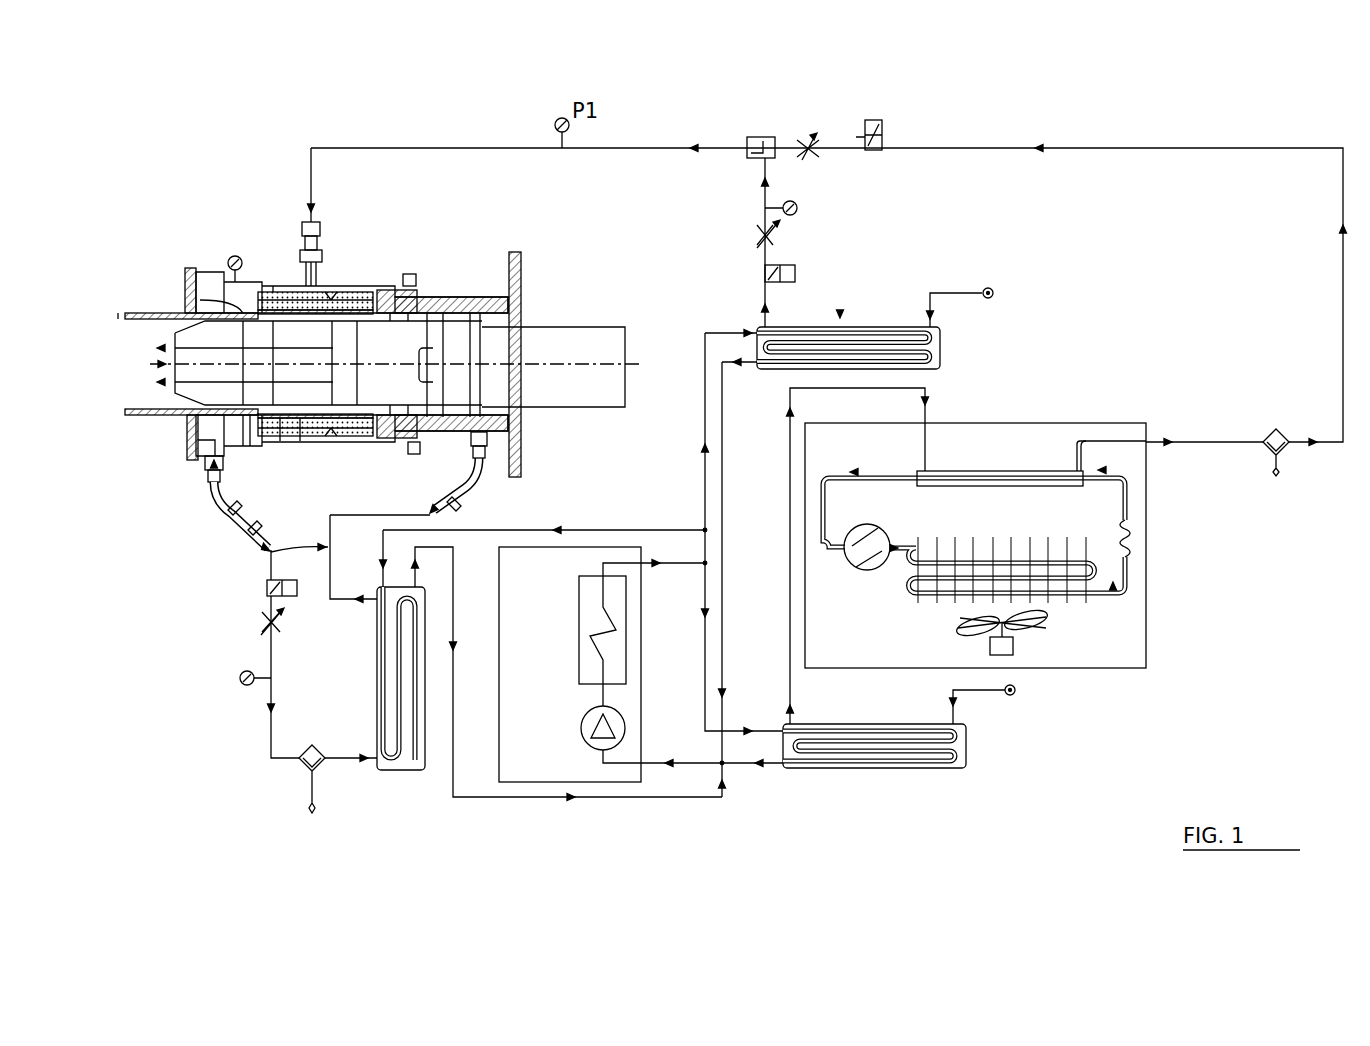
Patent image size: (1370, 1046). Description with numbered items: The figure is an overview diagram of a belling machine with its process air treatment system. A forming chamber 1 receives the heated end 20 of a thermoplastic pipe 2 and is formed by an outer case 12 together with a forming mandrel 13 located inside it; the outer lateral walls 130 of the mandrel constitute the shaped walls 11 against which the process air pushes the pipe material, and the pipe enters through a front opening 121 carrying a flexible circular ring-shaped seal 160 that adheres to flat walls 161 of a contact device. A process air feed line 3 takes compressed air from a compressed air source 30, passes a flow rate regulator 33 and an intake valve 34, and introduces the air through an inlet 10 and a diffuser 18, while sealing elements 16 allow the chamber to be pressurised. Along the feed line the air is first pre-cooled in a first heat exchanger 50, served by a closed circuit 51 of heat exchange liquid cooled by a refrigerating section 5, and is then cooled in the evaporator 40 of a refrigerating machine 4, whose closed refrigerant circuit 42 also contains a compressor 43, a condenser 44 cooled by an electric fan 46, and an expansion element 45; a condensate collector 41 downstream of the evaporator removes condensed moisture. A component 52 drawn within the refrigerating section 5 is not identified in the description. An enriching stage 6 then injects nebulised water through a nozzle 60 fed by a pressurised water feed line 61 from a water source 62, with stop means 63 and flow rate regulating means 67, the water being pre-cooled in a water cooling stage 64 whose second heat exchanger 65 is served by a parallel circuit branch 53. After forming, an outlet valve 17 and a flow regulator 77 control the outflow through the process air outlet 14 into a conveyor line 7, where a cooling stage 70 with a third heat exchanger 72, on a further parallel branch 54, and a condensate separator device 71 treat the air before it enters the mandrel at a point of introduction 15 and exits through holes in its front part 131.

The forming chamber 1 is at (226, 300).
The pipe 2 is at (133, 313).
The process air feed line 3 is at (442, 149).
The refrigerating machine 4 is at (1020, 539).
The refrigerating section 5 is at (550, 711).
The enriching stage 6 is at (733, 243).
The process air conveyor line 7 is at (262, 568).
The inlet 10 is at (331, 270).
The shaped walls 11 is at (276, 441).
The outer case 12 is at (249, 446).
The forming mandrel 13 is at (385, 300).
The process air outlet 14 is at (203, 467).
The point of introduction 15 is at (443, 416).
The sealing elements 16 is at (143, 313).
The outlet valve 17 is at (297, 598).
The diffuser 18 is at (300, 285).
The heated end of the pipe 20 is at (298, 296).
The compressed air source 30 is at (1016, 695).
The flow rate regulator 33 is at (815, 155).
The intake valve 34 is at (884, 130).
The evaporator 40 is at (1010, 470).
The condensate collector 41 is at (1283, 450).
The closed circuit for recirculating the refrigerant 42 is at (1127, 487).
The compressor 43 is at (873, 531).
The condenser 44 is at (1002, 548).
The expansion element 45 is at (1133, 540).
The electric fan 46 is at (1048, 628).
The first heat exchanger 50 is at (862, 770).
The closed circuit for the heat exchange liquid 51 is at (745, 768).
The heating device 52 is at (498, 702).
The circuit branch 53 is at (704, 362).
The circuit branch 54 is at (496, 530).
The nozzle 60 is at (756, 147).
The pressurised water feed line 61 is at (761, 257).
The water source 62 is at (995, 290).
The means for stopping the inflow of process water 63 is at (797, 273).
The water cooling stage 64 is at (840, 312).
The second heat exchanger 65 is at (943, 352).
The means for regulating the flow rate of process water 67 is at (773, 238).
The cooling stage 70 is at (397, 728).
The condensate separator device 71 is at (306, 765).
The third heat exchanger 72 is at (408, 772).
The flow regulator 77 is at (266, 622).
The front opening 121 is at (198, 428).
The outer lateral walls 130 is at (380, 285).
The front part of the mandrel 131 is at (175, 348).
The flexible circular ring-shaped seal 160 is at (198, 300).
The flat walls 161 is at (184, 300).